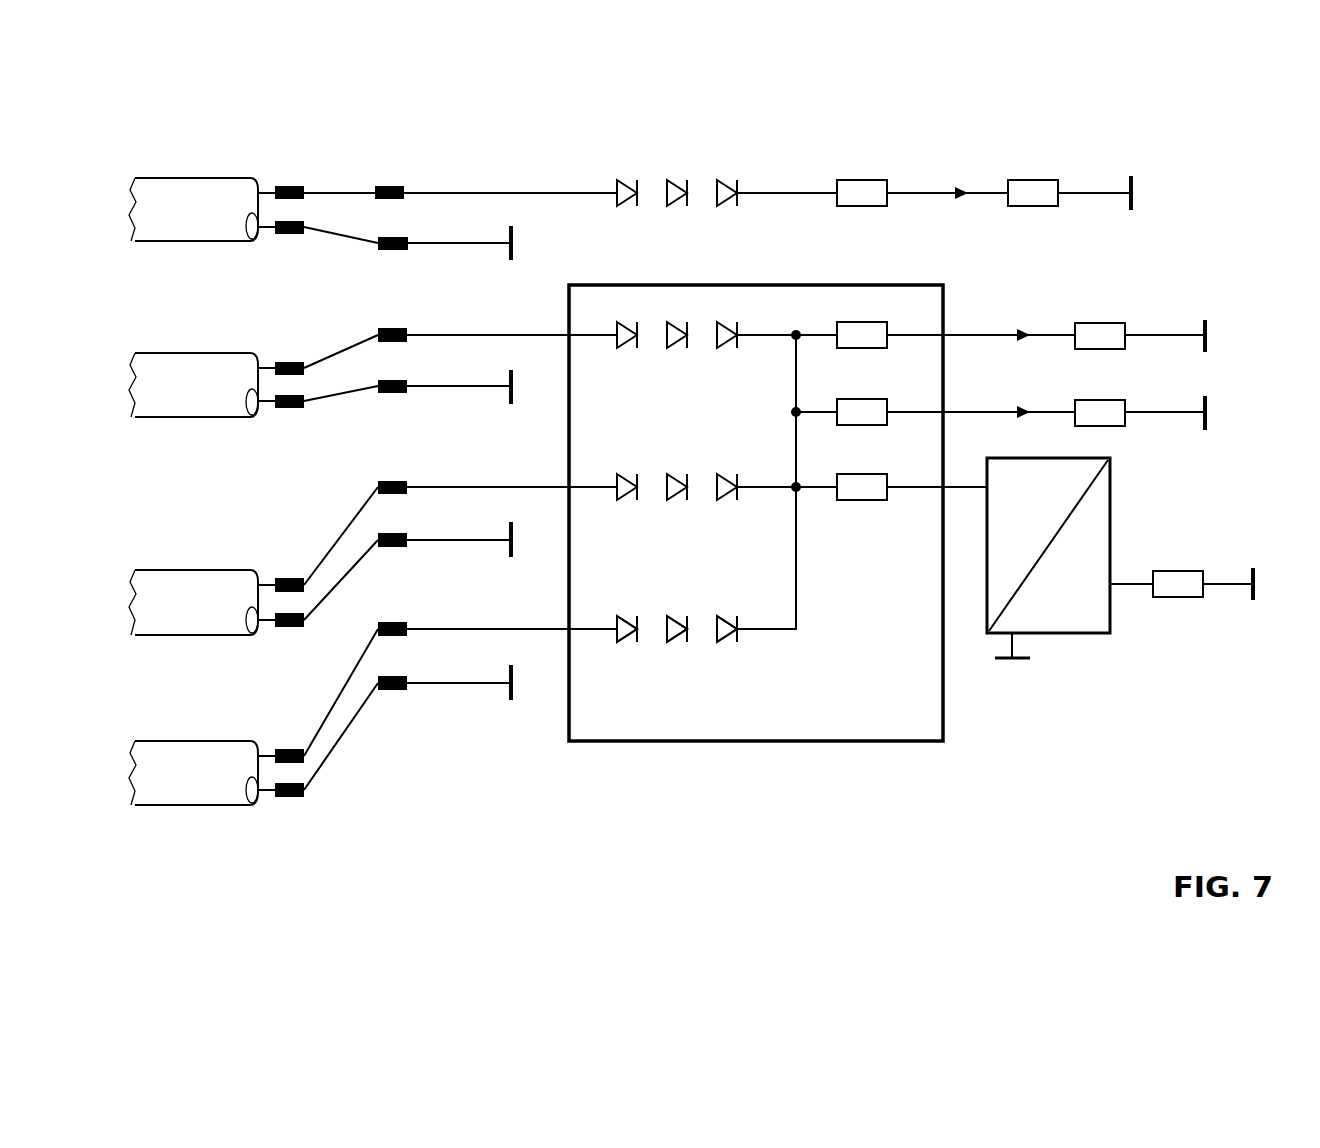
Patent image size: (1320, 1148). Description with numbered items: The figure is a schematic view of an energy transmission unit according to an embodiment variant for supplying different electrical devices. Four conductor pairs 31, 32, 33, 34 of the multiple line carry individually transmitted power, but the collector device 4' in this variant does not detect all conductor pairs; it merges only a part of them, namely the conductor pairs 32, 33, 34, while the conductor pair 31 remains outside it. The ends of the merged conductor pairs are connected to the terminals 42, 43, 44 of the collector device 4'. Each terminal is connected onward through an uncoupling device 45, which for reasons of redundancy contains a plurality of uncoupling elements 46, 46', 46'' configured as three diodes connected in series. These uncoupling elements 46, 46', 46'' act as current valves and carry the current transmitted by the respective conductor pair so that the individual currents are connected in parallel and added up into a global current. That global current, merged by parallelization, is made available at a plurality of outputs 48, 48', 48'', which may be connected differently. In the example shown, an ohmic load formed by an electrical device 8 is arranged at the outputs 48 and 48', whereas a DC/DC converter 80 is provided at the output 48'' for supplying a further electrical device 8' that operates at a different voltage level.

The collector device 4' is at (756, 563).
The conductor pair 31 is at (195, 228).
The conductor pair 32 is at (195, 403).
The conductor pair 33 is at (195, 620).
The conductor pair 34 is at (195, 793).
The terminal 42 is at (390, 362).
The terminal 43 is at (390, 511).
The terminal 44 is at (390, 657).
The uncoupling device 45 is at (607, 640).
The uncoupling element 46 is at (631, 371).
The uncoupling element 46' is at (684, 371).
The uncoupling element 46'' is at (738, 371).
The output 48 is at (1009, 306).
The output 48' is at (1009, 383).
The output 48'' is at (994, 601).
The electrical device 8 is at (1140, 347).
The electrical device 8' is at (1181, 556).
The DC/DC converter 80 is at (1095, 620).